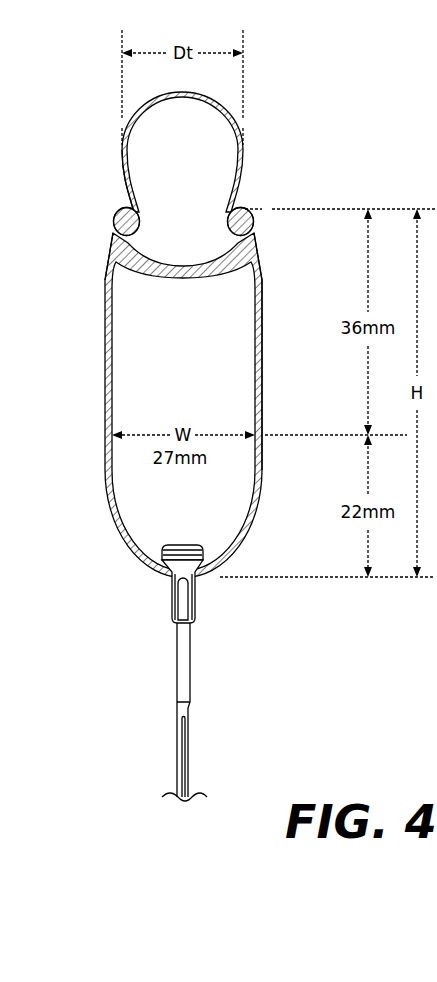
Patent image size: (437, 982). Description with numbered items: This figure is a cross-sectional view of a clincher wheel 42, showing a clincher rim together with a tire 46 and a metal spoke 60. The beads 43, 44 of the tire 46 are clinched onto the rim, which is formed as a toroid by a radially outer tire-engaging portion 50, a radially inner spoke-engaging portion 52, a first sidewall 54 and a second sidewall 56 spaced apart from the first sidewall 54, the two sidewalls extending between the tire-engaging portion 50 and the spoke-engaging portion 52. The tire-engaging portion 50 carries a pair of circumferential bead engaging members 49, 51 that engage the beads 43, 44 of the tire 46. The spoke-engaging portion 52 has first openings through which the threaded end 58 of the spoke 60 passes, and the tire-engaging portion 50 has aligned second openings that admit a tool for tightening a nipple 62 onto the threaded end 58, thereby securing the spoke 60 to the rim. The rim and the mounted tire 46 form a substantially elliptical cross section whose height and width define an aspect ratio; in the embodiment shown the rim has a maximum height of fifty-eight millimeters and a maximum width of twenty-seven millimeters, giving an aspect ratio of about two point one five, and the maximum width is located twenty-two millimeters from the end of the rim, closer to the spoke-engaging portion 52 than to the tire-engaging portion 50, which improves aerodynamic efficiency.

The clincher wheel 42 is at (307, 187).
The bead 43 is at (113, 238).
The bead 44 is at (252, 245).
The tire 46 is at (240, 187).
The bead engaging member 49 is at (112, 219).
The tire-engaging portion 50 is at (109, 198).
The bead engaging member 51 is at (252, 222).
The spoke-engaging portion 52 is at (181, 673).
The first sidewall 54 is at (104, 354).
The second sidewall 56 is at (262, 358).
The threaded end 58 is at (184, 600).
The spoke 60 is at (184, 672).
The nipple 62 is at (166, 574).